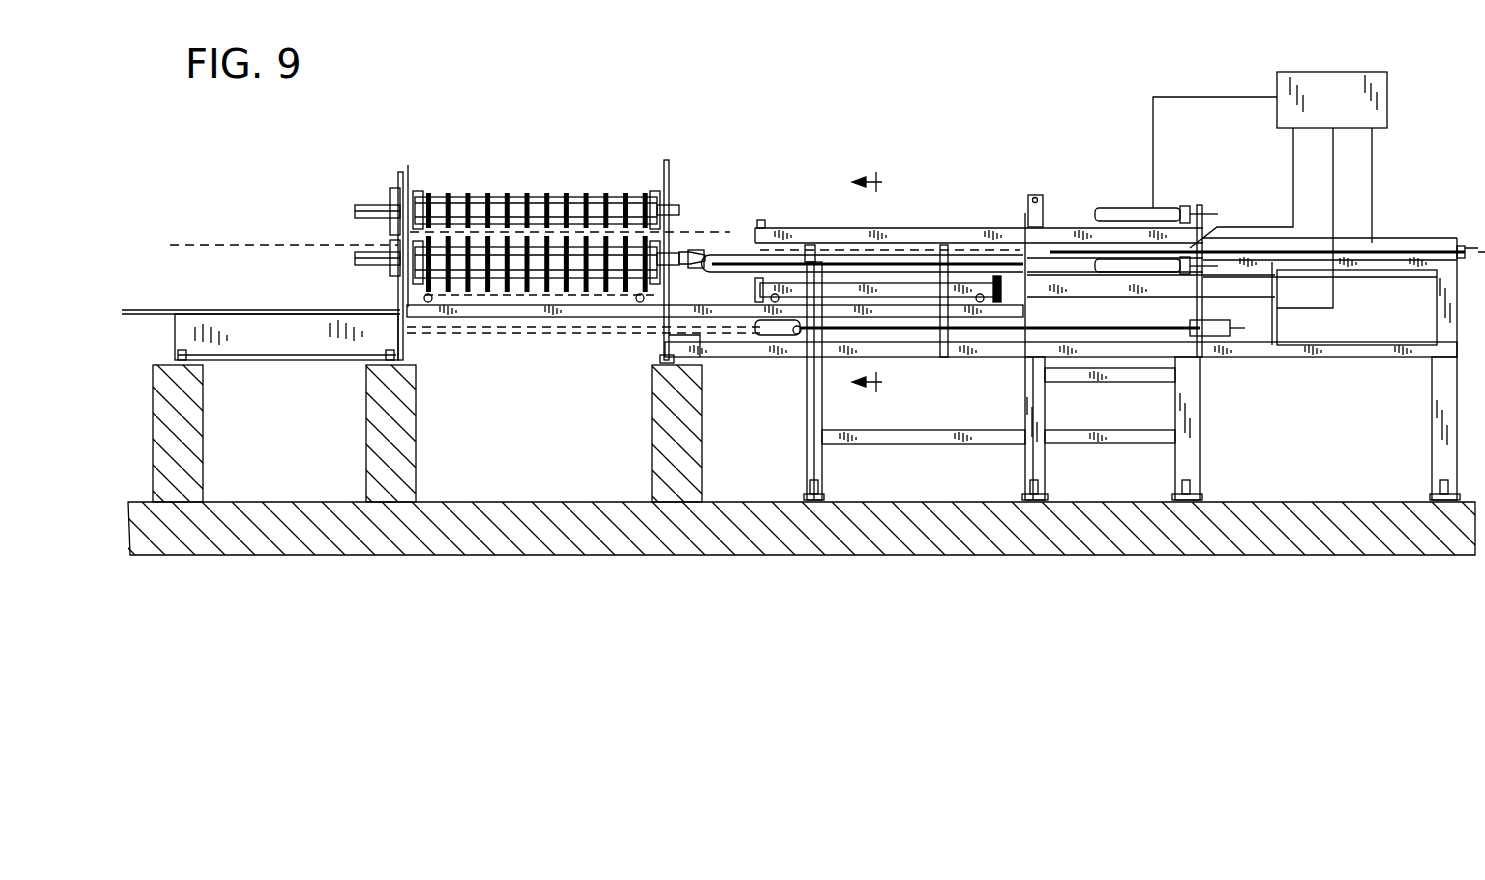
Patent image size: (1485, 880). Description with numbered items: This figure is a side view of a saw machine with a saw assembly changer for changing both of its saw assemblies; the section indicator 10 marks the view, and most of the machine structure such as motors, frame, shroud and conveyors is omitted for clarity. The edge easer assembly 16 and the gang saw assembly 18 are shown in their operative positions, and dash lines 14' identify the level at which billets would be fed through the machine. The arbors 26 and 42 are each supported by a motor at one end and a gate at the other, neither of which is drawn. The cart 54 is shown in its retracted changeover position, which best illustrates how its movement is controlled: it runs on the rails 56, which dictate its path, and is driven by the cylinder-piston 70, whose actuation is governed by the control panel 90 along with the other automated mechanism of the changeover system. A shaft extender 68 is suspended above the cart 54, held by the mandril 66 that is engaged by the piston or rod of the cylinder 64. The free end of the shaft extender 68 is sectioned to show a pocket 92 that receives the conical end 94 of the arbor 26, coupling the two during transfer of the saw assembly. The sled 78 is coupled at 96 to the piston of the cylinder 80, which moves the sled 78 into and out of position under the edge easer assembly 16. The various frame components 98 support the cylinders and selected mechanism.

The section line 10- 10 is at (882, 282).
The dash lines 14' is at (450, 207).
The edge easer assembly 16 is at (498, 192).
The gang saw assembly 18 is at (534, 240).
The arbor 26 is at (373, 262).
The arbor 42 is at (380, 205).
The cart 54 is at (838, 290).
The rails 56 is at (480, 312).
The cylinder 64 is at (568, 327).
The mandril 66 is at (1078, 255).
The shaft extender 68 is at (735, 250).
The cylinder-piston 70 is at (905, 330).
The sled 78 is at (843, 230).
The cylinder 80 is at (1400, 244).
The control panel 90 is at (1318, 112).
The pocket 92 is at (703, 262).
The conical end 94 is at (678, 252).
The coupling 96 is at (1030, 242).
The frame components 98 is at (668, 172).